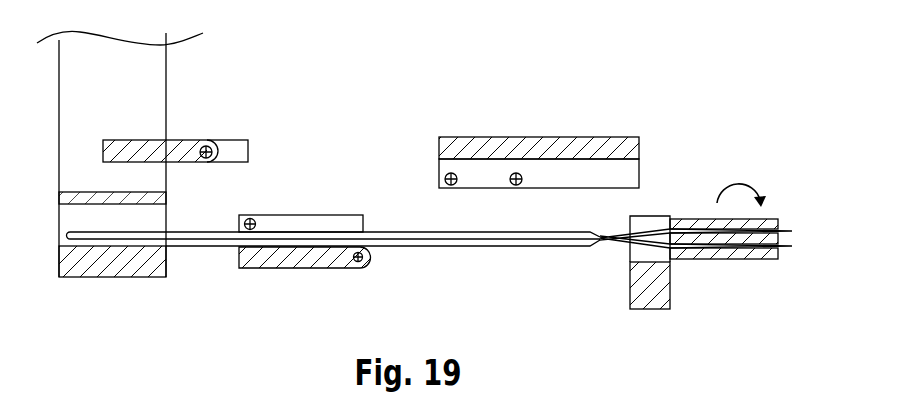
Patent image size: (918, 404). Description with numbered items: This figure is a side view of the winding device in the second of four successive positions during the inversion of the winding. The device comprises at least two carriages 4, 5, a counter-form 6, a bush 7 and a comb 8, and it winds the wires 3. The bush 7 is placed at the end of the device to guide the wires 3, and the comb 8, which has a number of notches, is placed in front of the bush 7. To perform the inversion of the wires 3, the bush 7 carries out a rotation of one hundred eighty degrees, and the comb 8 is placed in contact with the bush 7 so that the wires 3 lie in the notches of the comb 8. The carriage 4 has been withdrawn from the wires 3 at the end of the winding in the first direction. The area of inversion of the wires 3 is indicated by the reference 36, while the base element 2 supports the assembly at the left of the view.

The base support 2 is at (118, 266).
The wires 3 is at (505, 247).
The carriage 4 is at (556, 146).
The carriage 5 is at (292, 250).
The counter-form 6 is at (186, 141).
The bush 7 is at (700, 219).
The comb 8 is at (664, 280).
The area of inversion 36 is at (598, 245).